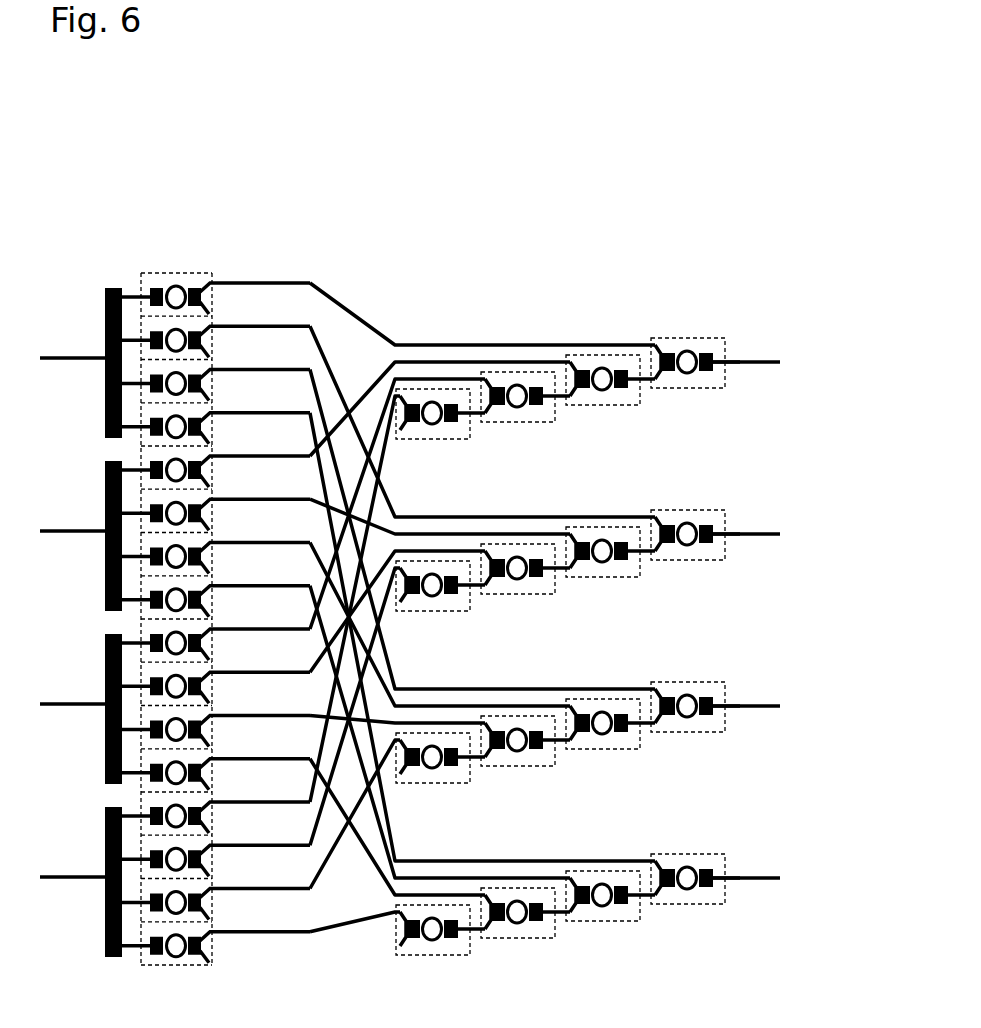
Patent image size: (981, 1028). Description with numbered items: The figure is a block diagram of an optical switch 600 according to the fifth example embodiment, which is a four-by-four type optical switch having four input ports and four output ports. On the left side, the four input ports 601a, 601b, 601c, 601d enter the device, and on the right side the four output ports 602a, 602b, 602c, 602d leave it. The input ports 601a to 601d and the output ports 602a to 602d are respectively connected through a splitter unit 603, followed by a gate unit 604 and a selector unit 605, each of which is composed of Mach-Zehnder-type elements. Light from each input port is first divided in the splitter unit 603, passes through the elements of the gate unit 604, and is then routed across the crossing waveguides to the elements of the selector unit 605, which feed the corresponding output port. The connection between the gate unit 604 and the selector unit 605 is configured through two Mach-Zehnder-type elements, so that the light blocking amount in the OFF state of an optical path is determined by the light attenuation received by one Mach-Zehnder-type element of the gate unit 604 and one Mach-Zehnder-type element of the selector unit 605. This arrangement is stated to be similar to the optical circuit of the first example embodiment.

The optical switch 600 is at (464, 157).
The input port 601a is at (60, 352).
The input port 601b is at (60, 525).
The input port 601c is at (60, 698).
The input port 601d is at (60, 871).
The output port 602a is at (762, 357).
The output port 602b is at (762, 529).
The output port 602c is at (762, 701).
The output port 602d is at (762, 873).
The splitter unit 603 is at (140, 258).
The gate unit 604 is at (245, 258).
The selector unit 605 is at (725, 262).